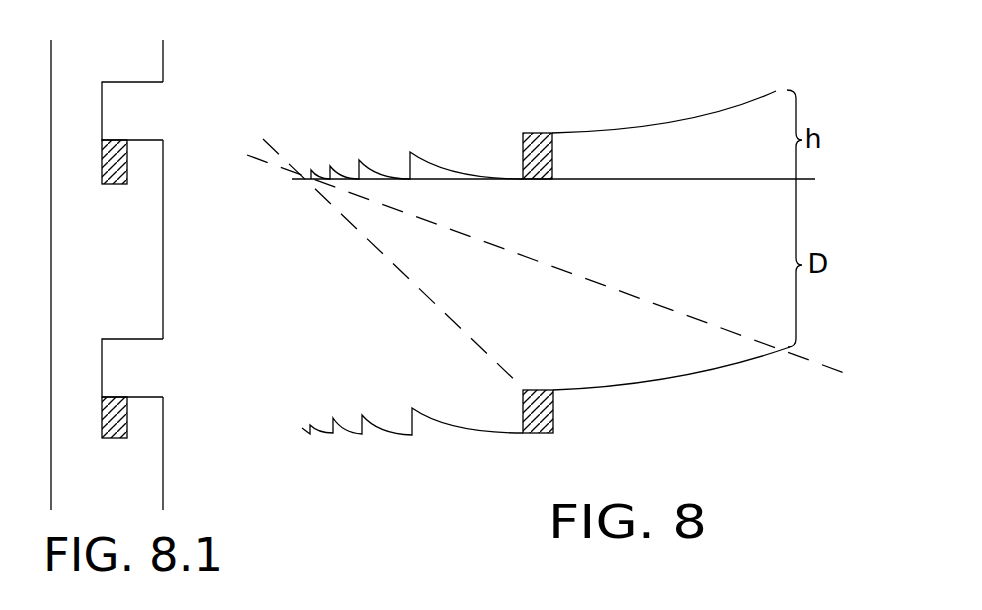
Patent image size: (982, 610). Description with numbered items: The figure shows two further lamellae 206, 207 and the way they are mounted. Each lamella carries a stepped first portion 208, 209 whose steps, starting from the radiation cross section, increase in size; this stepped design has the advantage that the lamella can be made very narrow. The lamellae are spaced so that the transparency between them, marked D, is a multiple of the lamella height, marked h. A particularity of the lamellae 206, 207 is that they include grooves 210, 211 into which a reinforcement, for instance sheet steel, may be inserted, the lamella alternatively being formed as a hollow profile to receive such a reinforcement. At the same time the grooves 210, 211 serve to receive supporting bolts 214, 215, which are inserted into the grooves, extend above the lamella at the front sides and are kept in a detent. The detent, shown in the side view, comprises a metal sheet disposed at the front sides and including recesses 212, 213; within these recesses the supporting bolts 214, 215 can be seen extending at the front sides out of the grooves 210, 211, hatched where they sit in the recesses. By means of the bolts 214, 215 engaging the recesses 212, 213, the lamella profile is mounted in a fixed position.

In FIG. 8, the lamella 206 is at (610, 209).
In FIG. 8, the lamella 207 is at (638, 355).
In FIG. 8, the first portion 208 is at (421, 134).
In FIG. 8, the first portion 209 is at (420, 387).
In FIG. 8, the groove 210 is at (527, 188).
In FIG. 8, the groove 211 is at (524, 448).
In FIG. 8.1, the recess 212 is at (171, 103).
In FIG. 8.1, the recess 213 is at (171, 360).
In FIG. 8.1, the supporting bolt 214 is at (117, 140).
In FIG. 8.1, the supporting bolt 215 is at (117, 397).